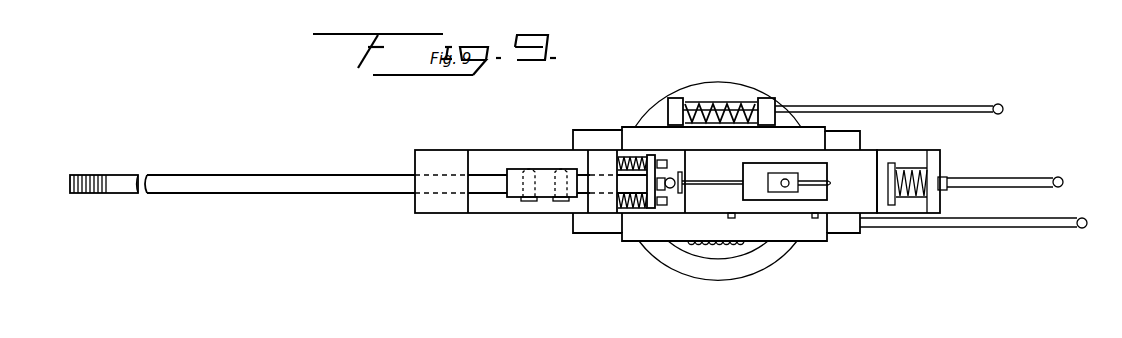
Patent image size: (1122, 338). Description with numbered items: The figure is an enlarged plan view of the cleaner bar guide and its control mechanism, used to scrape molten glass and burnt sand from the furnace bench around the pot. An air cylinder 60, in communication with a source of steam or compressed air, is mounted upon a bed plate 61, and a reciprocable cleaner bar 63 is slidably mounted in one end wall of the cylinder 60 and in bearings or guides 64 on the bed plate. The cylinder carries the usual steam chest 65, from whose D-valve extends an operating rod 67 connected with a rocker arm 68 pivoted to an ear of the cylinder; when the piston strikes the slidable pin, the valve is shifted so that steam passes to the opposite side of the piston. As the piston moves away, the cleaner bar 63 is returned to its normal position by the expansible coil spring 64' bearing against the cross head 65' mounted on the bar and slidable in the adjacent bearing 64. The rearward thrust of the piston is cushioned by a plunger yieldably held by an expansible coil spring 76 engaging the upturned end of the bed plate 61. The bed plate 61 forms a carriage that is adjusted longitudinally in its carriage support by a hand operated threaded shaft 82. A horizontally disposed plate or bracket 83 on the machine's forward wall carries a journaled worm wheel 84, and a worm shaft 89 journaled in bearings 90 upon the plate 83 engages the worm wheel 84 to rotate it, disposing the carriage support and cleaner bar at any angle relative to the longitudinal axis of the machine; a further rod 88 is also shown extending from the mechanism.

The air cylinder 60 is at (862, 160).
The bed plate 61 is at (517, 205).
The cleaner bar 63 is at (362, 186).
The bearings or guides 64 is at (646, 205).
The expansible coil spring 64' is at (612, 198).
The steam chest 65 is at (821, 153).
The cross head 65' is at (696, 169).
The operating rod 67 is at (705, 186).
The rocker arm 68 is at (646, 226).
The expansible coil spring 76 is at (917, 173).
The hand operated threaded shaft 82 is at (1020, 188).
The plate or bracket 83 is at (780, 253).
The worm wheel 84 is at (717, 103).
The rod 88 is at (990, 223).
The worm shaft 89 is at (857, 105).
The bearings 90 is at (675, 98).